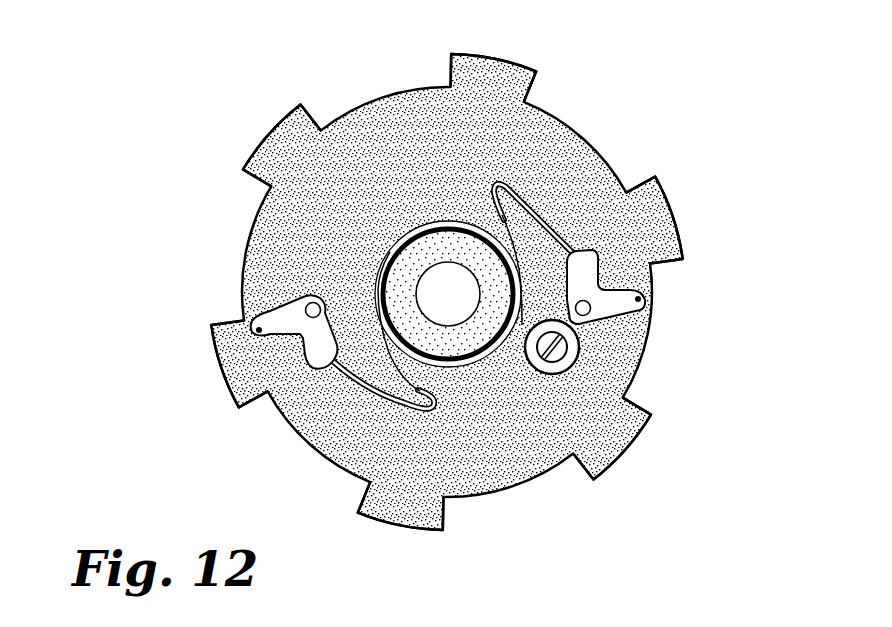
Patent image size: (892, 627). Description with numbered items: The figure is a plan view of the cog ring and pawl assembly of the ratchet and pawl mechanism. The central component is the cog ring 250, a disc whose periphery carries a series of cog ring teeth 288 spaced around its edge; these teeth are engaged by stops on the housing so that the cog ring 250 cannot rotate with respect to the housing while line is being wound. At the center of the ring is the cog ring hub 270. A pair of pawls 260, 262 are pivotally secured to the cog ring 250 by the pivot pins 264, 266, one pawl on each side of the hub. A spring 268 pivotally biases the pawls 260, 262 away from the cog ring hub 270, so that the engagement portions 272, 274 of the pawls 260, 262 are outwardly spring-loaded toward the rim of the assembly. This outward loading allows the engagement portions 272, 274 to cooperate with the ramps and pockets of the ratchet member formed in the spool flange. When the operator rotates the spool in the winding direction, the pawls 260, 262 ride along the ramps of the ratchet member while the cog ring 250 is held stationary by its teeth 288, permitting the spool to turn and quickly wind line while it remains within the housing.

The cog ring 250 is at (508, 480).
The cog ring teeth 288 is at (283, 135).
The cog ring hub 270 is at (428, 252).
The spring 268 is at (512, 177).
The pawl 260 is at (294, 338).
The pivot pin 264 is at (306, 298).
The engagement portion 272 is at (270, 335).
The pawl 262 is at (639, 320).
The engagement portion 274 is at (641, 291).
The pivot pin 266 is at (608, 306).